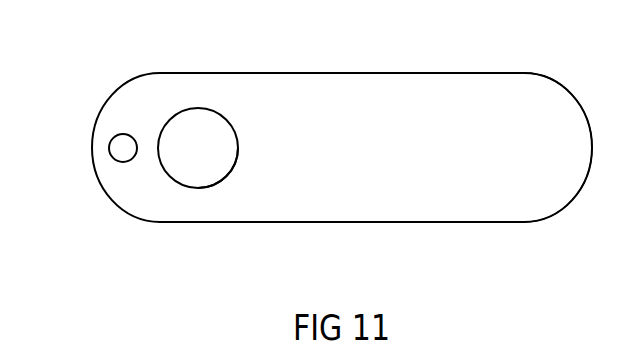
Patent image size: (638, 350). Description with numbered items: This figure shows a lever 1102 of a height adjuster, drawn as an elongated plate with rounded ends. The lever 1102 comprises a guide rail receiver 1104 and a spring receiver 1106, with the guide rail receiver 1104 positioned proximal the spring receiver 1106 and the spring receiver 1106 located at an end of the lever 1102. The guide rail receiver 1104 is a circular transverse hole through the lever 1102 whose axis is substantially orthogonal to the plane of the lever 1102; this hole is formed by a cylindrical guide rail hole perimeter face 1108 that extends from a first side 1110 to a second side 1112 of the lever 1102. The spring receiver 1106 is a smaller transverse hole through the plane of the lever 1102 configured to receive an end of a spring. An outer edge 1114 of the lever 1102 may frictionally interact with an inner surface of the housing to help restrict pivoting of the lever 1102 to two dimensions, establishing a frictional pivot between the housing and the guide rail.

The lever 1102 is at (447, 115).
The guide rail receiver 1104 is at (216, 165).
The spring receiver 1106 is at (109, 147).
The guide rail hole perimeter face 1108 is at (237, 145).
The first side 1110 is at (449, 188).
The second side 1112 is at (264, 222).
The outer edge 1114 is at (264, 73).